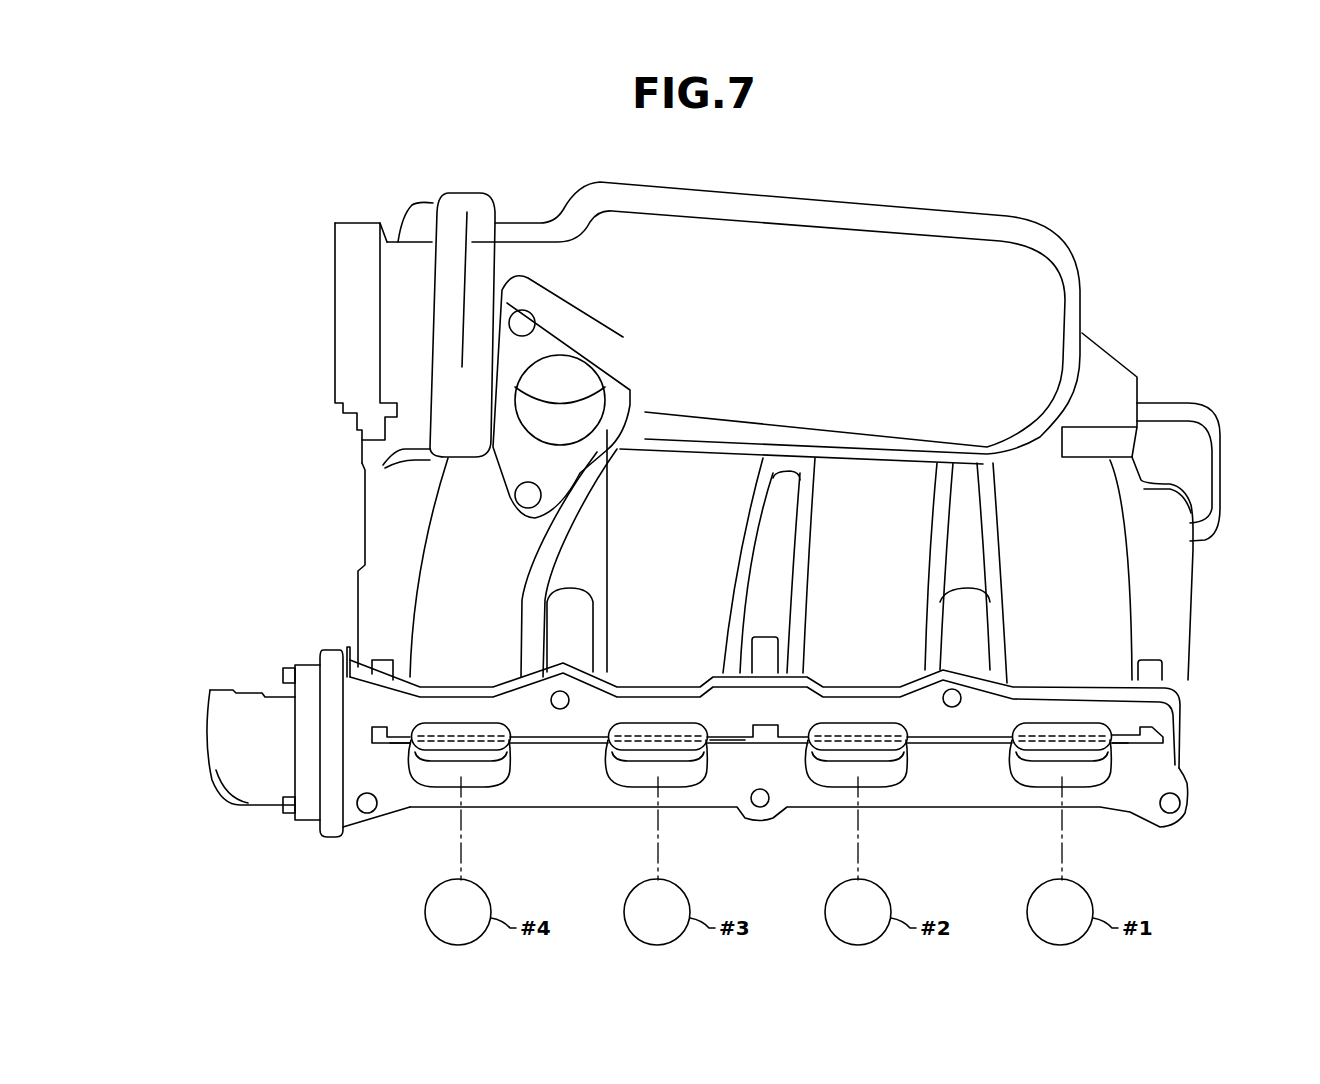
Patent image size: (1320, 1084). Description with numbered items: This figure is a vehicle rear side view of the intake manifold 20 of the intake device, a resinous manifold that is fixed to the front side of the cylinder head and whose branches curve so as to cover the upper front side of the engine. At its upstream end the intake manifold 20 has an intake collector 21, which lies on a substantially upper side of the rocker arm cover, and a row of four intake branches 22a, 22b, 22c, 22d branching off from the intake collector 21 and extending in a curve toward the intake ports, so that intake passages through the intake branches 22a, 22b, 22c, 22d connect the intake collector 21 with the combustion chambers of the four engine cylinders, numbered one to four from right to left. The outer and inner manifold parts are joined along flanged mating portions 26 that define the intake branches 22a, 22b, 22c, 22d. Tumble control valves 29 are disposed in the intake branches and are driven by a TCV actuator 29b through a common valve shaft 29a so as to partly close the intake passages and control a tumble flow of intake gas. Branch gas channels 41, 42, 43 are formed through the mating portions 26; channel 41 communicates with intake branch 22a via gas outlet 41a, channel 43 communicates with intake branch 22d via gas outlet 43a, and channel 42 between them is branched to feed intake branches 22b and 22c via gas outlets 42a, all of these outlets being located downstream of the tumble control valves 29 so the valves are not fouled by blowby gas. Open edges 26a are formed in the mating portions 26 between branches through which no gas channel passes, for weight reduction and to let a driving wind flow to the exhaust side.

The intake manifold 20 is at (553, 186).
The intake collector 21 is at (810, 242).
The intake branch 22a is at (1103, 571).
The intake branch 22b is at (907, 500).
The intake branch 22c is at (665, 510).
The intake branch 22d is at (470, 509).
The mating portions 26 is at (530, 582).
The open edges 26a is at (543, 645).
The tumble control valves 29 is at (440, 727).
The valve shaft 29a is at (449, 732).
The TCV actuator 29b is at (235, 765).
The branch gas channel 41 is at (1127, 742).
The gas outlet 41a is at (1128, 743).
The branch gas channel 42 is at (767, 737).
The gas outlets 42a is at (725, 743).
The branch gas channel 43 is at (390, 748).
The gas outlet 43a is at (397, 748).